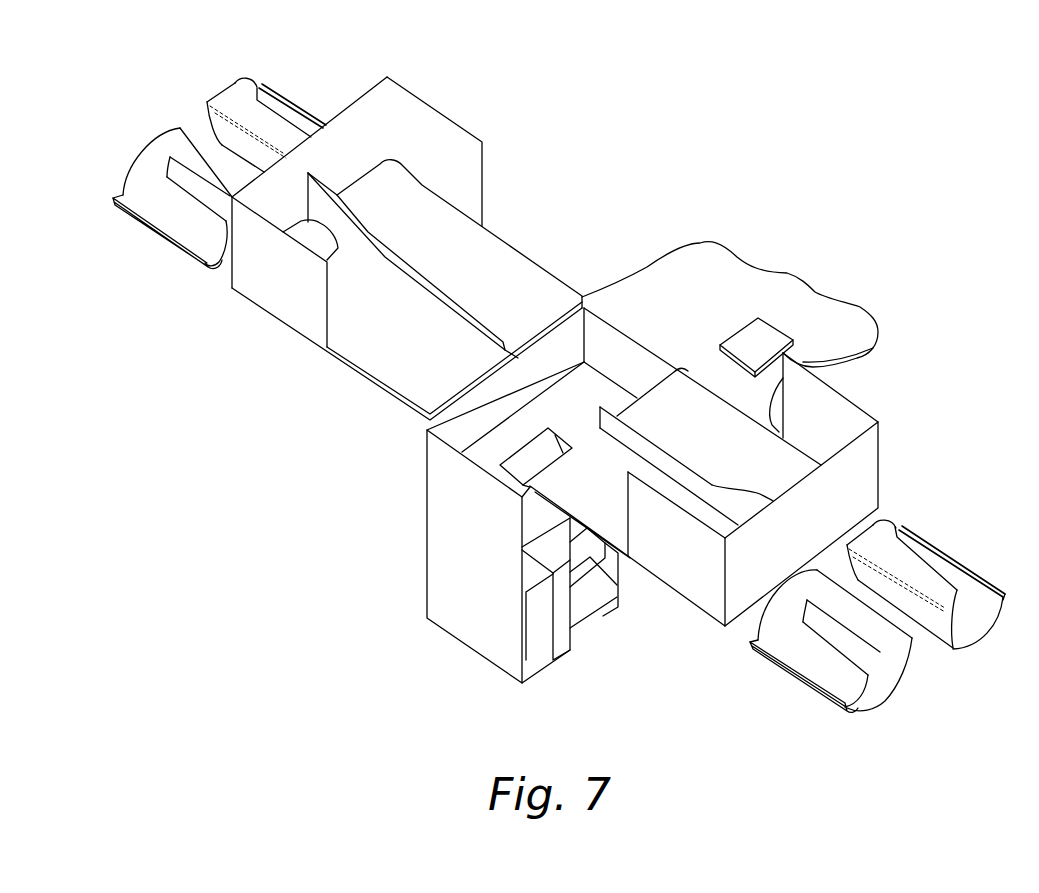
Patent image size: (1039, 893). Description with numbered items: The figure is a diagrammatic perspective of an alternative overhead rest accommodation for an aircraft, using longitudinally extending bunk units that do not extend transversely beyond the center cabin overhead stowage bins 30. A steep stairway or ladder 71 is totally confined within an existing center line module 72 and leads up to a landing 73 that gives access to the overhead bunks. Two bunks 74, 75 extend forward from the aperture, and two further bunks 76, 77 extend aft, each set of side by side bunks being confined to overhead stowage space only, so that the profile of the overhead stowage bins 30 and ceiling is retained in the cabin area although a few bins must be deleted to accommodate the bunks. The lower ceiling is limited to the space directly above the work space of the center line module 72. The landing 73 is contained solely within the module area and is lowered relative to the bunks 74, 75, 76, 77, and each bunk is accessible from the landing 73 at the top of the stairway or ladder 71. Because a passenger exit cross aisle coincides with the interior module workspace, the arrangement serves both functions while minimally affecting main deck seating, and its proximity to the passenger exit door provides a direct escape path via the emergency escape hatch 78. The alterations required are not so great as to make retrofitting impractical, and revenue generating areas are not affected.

The overhead stowage bins 30 is at (180, 137).
The stairway or ladder 71 is at (596, 614).
The center line module 72 is at (428, 551).
The landing 73 is at (587, 380).
The bunk 74 is at (392, 365).
The bunk 75 is at (512, 265).
The bunk 76 is at (580, 493).
The bunk 77 is at (692, 394).
The emergency escape hatch 78 is at (780, 330).